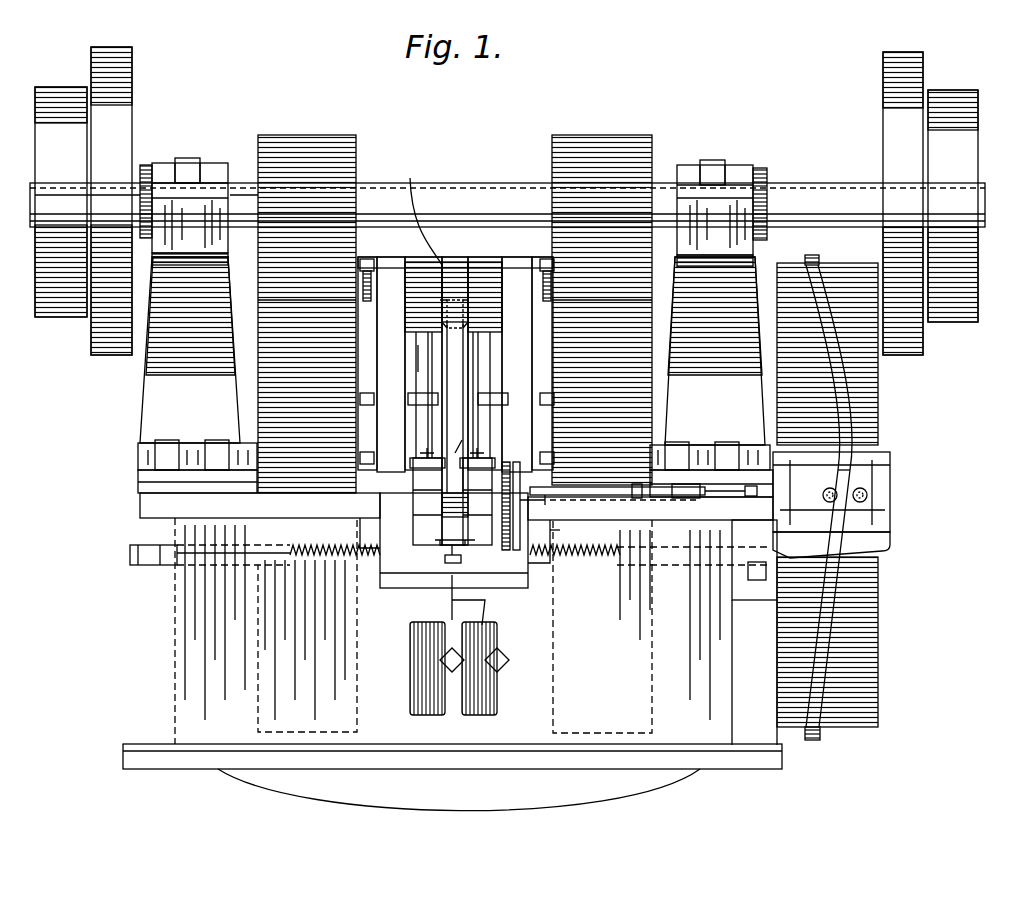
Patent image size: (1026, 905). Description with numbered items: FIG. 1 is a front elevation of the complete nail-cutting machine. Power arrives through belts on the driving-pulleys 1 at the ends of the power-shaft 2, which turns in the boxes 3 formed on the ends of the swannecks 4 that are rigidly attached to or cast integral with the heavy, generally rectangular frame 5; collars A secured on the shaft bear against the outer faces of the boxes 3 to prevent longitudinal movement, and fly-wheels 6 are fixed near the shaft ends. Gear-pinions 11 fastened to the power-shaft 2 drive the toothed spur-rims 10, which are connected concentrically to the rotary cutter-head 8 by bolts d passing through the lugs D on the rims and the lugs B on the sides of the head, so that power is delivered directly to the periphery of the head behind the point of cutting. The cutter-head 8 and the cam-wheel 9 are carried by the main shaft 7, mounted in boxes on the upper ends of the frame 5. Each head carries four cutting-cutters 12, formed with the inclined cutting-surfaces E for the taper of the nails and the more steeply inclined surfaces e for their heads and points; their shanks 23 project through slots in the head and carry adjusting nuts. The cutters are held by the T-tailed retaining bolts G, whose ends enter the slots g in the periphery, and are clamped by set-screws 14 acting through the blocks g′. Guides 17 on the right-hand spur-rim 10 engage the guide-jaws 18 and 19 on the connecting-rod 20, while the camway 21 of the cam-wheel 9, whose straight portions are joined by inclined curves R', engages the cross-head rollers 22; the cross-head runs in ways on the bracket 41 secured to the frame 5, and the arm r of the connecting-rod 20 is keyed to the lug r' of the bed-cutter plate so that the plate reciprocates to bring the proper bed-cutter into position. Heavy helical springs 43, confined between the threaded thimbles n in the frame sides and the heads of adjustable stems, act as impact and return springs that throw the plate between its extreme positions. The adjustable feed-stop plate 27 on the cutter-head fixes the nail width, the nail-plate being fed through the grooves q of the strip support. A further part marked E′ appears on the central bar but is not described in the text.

The driving-pulleys 1 is at (37, 240).
The power-shaft 2 is at (32, 200).
The boxes 3 is at (205, 161).
The collars A is at (147, 162).
The swannecks 4 is at (153, 389).
The frame 5 is at (733, 649).
The fly-wheels 6 is at (125, 123).
The main shaft 7 is at (253, 472).
The rotary cutter-head 8 is at (451, 320).
The cam-wheel 9 is at (897, 419).
The spur-rims 10 is at (268, 277).
The gear-pinions 11 is at (305, 143).
The cutting-cutters 12 is at (130, 554).
The set-screws 14 is at (364, 260).
The guides 17 is at (662, 470).
The guide-jaw 18 is at (640, 499).
The guide-jaw 19 is at (695, 500).
The connecting-rod 20 is at (706, 494).
The camway 21 is at (850, 406).
The antifriction-rollers 22 is at (836, 496).
The shanks 23 is at (463, 322).
The feed-stop plate 27 is at (440, 304).
The bracket 41 is at (880, 546).
The impact and return spring 43 is at (312, 563).
The lugs B is at (455, 363).
The lugs D is at (362, 300).
The inclined cutting-surfaces E is at (452, 263).
The central rod E′ is at (455, 407).
The T-tailed cutter-retaining bolts G is at (410, 265).
The inclined curves R' is at (827, 496).
The bolts d is at (428, 371).
The cutting-surfaces e is at (440, 262).
The slots g is at (457, 412).
The blocks g′ is at (403, 398).
The threaded thimble n is at (432, 565).
The grooves q is at (418, 541).
The arm r is at (625, 506).
The lug r' is at (570, 529).